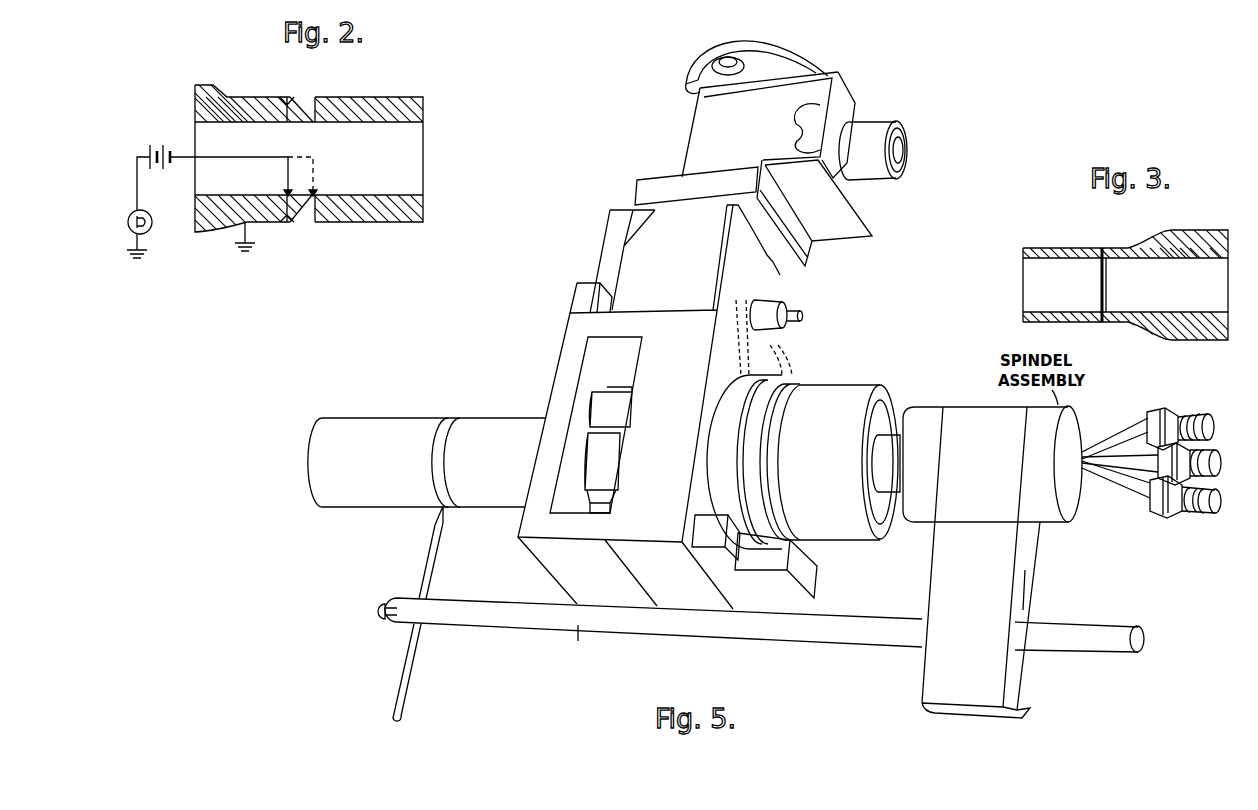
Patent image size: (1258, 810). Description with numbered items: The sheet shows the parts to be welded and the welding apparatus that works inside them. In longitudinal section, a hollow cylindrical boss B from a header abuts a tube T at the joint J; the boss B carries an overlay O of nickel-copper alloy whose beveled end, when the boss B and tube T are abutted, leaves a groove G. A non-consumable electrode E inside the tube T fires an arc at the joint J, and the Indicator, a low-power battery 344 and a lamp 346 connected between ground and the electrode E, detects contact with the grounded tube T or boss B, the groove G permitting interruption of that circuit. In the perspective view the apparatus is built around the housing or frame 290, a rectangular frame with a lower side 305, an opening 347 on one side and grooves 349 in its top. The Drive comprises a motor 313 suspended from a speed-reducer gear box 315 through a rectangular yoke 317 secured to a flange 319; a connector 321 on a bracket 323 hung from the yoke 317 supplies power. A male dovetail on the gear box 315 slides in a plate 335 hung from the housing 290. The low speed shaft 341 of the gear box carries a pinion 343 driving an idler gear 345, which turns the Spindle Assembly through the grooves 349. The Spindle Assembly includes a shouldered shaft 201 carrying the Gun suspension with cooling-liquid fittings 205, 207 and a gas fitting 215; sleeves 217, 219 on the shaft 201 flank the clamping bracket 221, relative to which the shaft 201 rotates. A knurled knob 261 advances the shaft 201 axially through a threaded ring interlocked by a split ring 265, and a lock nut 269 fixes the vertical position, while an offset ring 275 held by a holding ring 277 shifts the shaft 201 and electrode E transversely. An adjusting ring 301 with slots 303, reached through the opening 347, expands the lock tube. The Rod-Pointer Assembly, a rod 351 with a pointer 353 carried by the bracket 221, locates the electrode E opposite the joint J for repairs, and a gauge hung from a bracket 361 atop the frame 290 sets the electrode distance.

In FIG. 2, the battery 344 is at (162, 146).
In FIG. 2, the lamp 346 is at (129, 217).
In FIG. 2, the boss B is at (222, 96).
In FIG. 3, the boss B is at (1180, 232).
In FIG. 5, the boss B is at (369, 500).
In FIG. 2, the joint J is at (315, 97).
In FIG. 3, the joint J is at (1101, 248).
In FIG. 5, the joint J is at (446, 420).
In FIG. 2, the electrode E is at (304, 125).
In FIG. 3, the electrode E is at (1106, 311).
In FIG. 2, the groove G is at (310, 117).
In FIG. 3, the groove G is at (1106, 273).
In FIG. 2, the overlay O is at (306, 216).
In FIG. 3, the overlay O is at (1106, 322).
In FIG. 3, the tube T is at (1052, 248).
In FIG. 5, the tube T is at (482, 427).
In FIG. 5, the shaft 201 is at (880, 460).
In FIG. 5, the fitting 205 is at (1161, 410).
In FIG. 5, the fitting 207 is at (1211, 514).
In FIG. 5, the fitting 215 is at (1210, 455).
In FIG. 5, the sleeve 217 is at (1052, 523).
In FIG. 5, the sleeve 219 is at (923, 412).
In FIG. 5, the clamping bracket 221 is at (1025, 562).
In FIG. 5, the knurled knob 261 is at (840, 390).
In FIG. 5, the split ring 265 is at (886, 526).
In FIG. 5, the lock nut 269 is at (787, 390).
In FIG. 5, the offset ring 275 is at (722, 415).
In FIG. 5, the holding ring 277 is at (745, 452).
In FIG. 5, the housing 290 is at (493, 580).
In FIG. 5, the adjusting ring 301 is at (612, 413).
In FIG. 5, the slots 303 is at (610, 437).
In FIG. 5, the lower side 305 is at (566, 368).
In FIG. 5, the motor 313 is at (707, 146).
In FIG. 5, the speed-reducer gear box 315 is at (628, 258).
In FIG. 5, the rectangular yoke 317 is at (666, 185).
In FIG. 5, the flange 319 is at (793, 270).
In FIG. 5, the connector 321 is at (900, 151).
In FIG. 5, the bracket 323 is at (847, 97).
In FIG. 5, the plate 335 is at (580, 294).
In FIG. 5, the low speed shaft 341 is at (790, 312).
In FIG. 5, the pinion 343 is at (758, 298).
In FIG. 5, the idler gear 345 is at (792, 356).
In FIG. 5, the opening 347 is at (580, 412).
In FIG. 5, the grooves 349 is at (742, 352).
In FIG. 5, the rod 351 is at (808, 638).
In FIG. 5, the pointer 353 is at (412, 663).
In FIG. 5, the bracket 361 is at (810, 578).